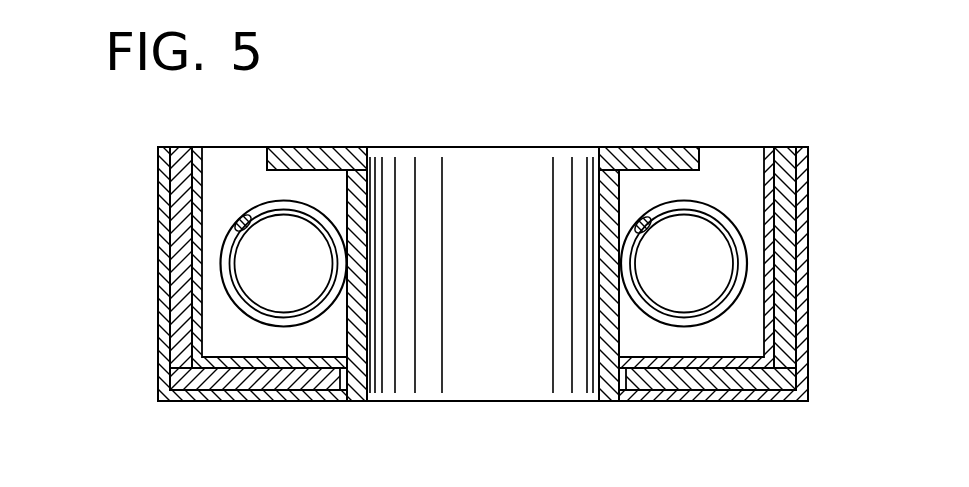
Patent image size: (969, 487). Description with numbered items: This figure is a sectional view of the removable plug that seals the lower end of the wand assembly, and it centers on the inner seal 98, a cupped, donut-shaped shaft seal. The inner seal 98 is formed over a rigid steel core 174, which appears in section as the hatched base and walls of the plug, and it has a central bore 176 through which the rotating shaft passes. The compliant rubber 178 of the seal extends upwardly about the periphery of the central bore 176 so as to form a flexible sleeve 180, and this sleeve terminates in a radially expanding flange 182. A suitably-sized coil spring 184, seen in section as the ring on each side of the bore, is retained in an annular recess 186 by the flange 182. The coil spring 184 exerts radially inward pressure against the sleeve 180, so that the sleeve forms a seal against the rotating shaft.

The inner seal 98 is at (153, 181).
The rigid steel core 174 is at (243, 377).
The central bore 176 is at (491, 188).
The compliant rubber 178 is at (158, 283).
The flexible sleeve 180 is at (360, 217).
The radially expanding flange 182 is at (298, 158).
The coil spring 184 is at (258, 208).
The annular recess 186 is at (730, 163).